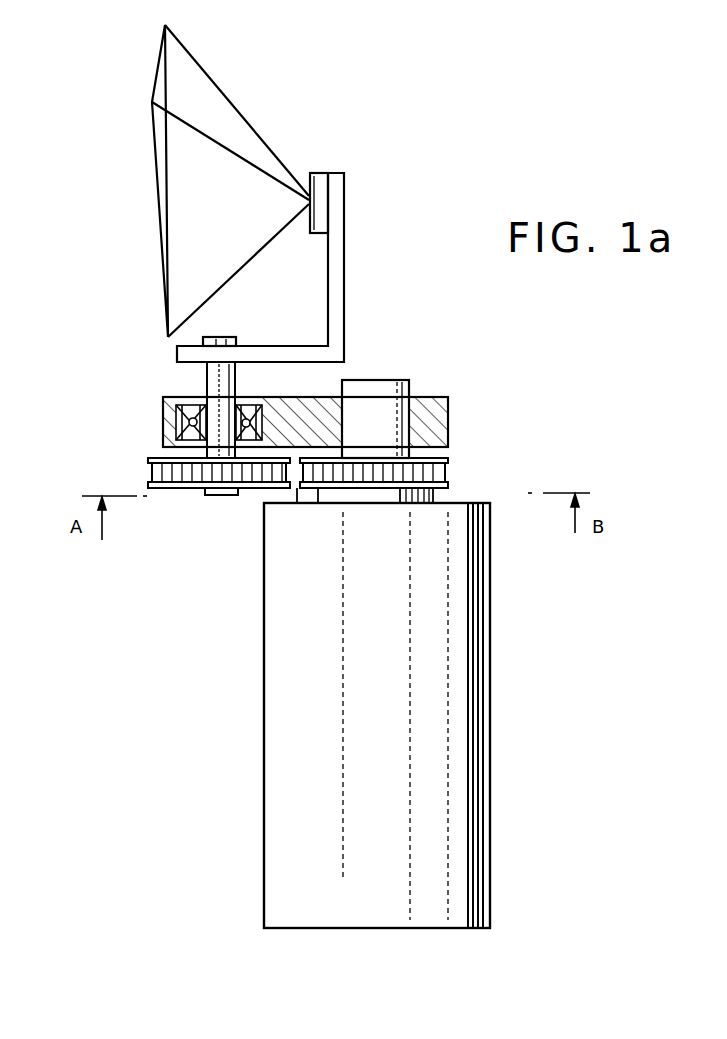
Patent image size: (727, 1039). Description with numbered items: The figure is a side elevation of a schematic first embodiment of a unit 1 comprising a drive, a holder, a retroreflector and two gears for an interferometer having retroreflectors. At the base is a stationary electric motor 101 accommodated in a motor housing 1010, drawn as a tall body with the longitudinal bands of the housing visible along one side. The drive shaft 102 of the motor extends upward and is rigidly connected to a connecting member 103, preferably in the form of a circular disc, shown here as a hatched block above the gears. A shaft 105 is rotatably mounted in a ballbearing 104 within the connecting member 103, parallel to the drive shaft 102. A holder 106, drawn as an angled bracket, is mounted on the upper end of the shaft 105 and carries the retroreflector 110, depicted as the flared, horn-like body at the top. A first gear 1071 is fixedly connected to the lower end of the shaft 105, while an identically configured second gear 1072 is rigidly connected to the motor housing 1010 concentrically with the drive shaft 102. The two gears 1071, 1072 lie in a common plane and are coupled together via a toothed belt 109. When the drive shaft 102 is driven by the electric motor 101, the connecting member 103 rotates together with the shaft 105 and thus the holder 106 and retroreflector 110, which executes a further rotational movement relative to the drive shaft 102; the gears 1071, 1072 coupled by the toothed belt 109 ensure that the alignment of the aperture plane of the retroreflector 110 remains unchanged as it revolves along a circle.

The unit 1 is at (548, 616).
The electric motor 101 is at (468, 773).
The motor housing 1010 is at (490, 675).
The drive shaft 102 is at (402, 379).
The connecting member 103 is at (448, 417).
The ballbearing 104 is at (164, 412).
The shaft 105 is at (206, 378).
The holder 106 is at (345, 268).
The first gear 1071 is at (150, 465).
The second gear 1072 is at (448, 461).
The toothed belt 109 is at (298, 489).
The retroreflector 110 is at (228, 167).